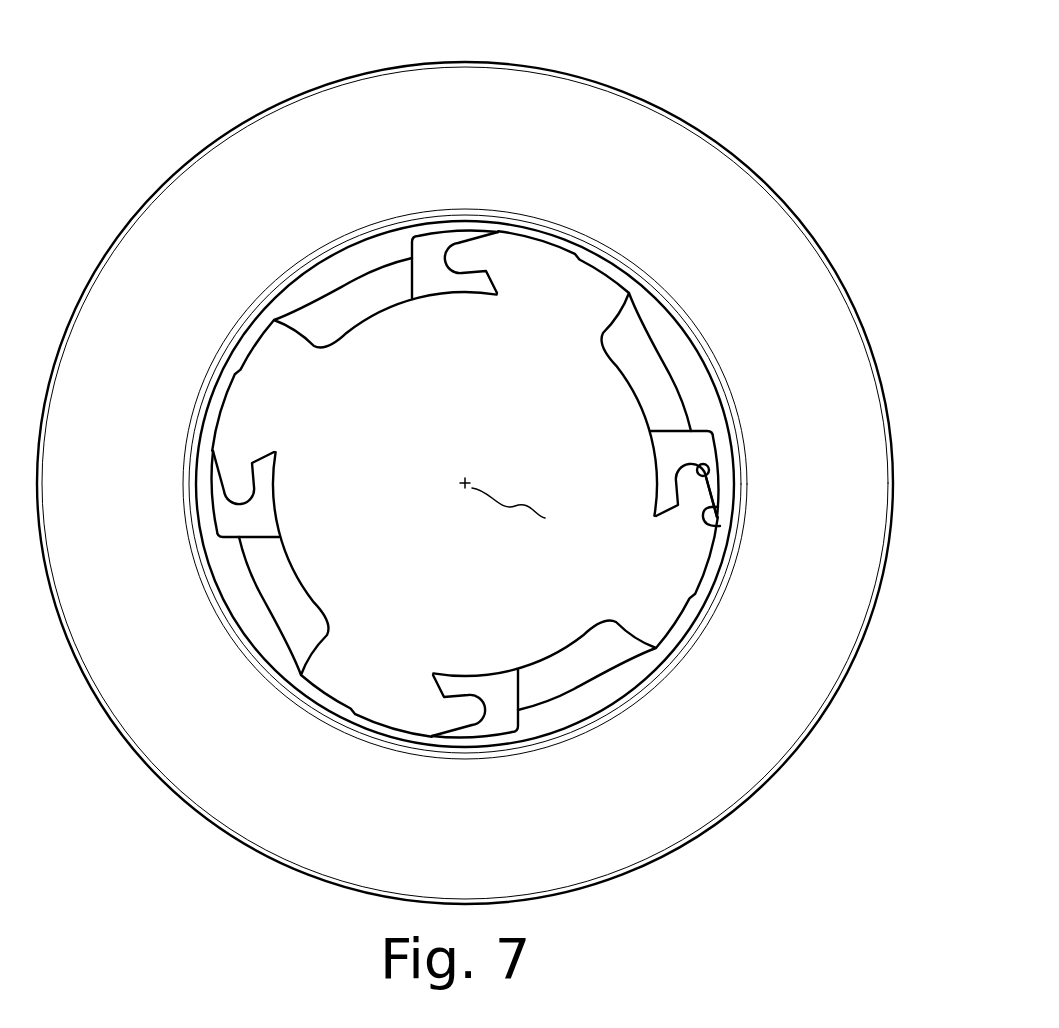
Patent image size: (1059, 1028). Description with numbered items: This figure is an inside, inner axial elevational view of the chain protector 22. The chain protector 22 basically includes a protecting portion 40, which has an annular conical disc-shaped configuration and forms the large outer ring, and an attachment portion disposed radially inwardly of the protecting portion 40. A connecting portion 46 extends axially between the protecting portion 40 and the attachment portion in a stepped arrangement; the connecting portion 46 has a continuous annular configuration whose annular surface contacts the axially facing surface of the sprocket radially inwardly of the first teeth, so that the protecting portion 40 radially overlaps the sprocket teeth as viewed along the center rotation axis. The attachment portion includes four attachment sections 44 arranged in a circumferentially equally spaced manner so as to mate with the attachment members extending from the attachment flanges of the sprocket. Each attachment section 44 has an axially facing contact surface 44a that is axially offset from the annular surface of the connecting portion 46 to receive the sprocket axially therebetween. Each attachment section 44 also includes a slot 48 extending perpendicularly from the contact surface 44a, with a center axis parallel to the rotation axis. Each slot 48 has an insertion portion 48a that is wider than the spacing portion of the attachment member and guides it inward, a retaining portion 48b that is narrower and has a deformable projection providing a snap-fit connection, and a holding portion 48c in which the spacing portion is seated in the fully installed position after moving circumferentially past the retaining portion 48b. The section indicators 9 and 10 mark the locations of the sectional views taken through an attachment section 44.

The chain protector 22 is at (692, 64).
The protecting portion 40 is at (707, 160).
The connecting portion 46 is at (660, 308).
The attachment section 44 is at (342, 305).
The axially facing contact surface 44a is at (417, 250).
The slot 48 is at (544, 484).
The insertion portion 48a is at (759, 536).
The retaining portion 48b is at (710, 492).
The holding portion 48c is at (712, 474).
The section line 9 is at (472, 55).
The section line 10 is at (233, 115).